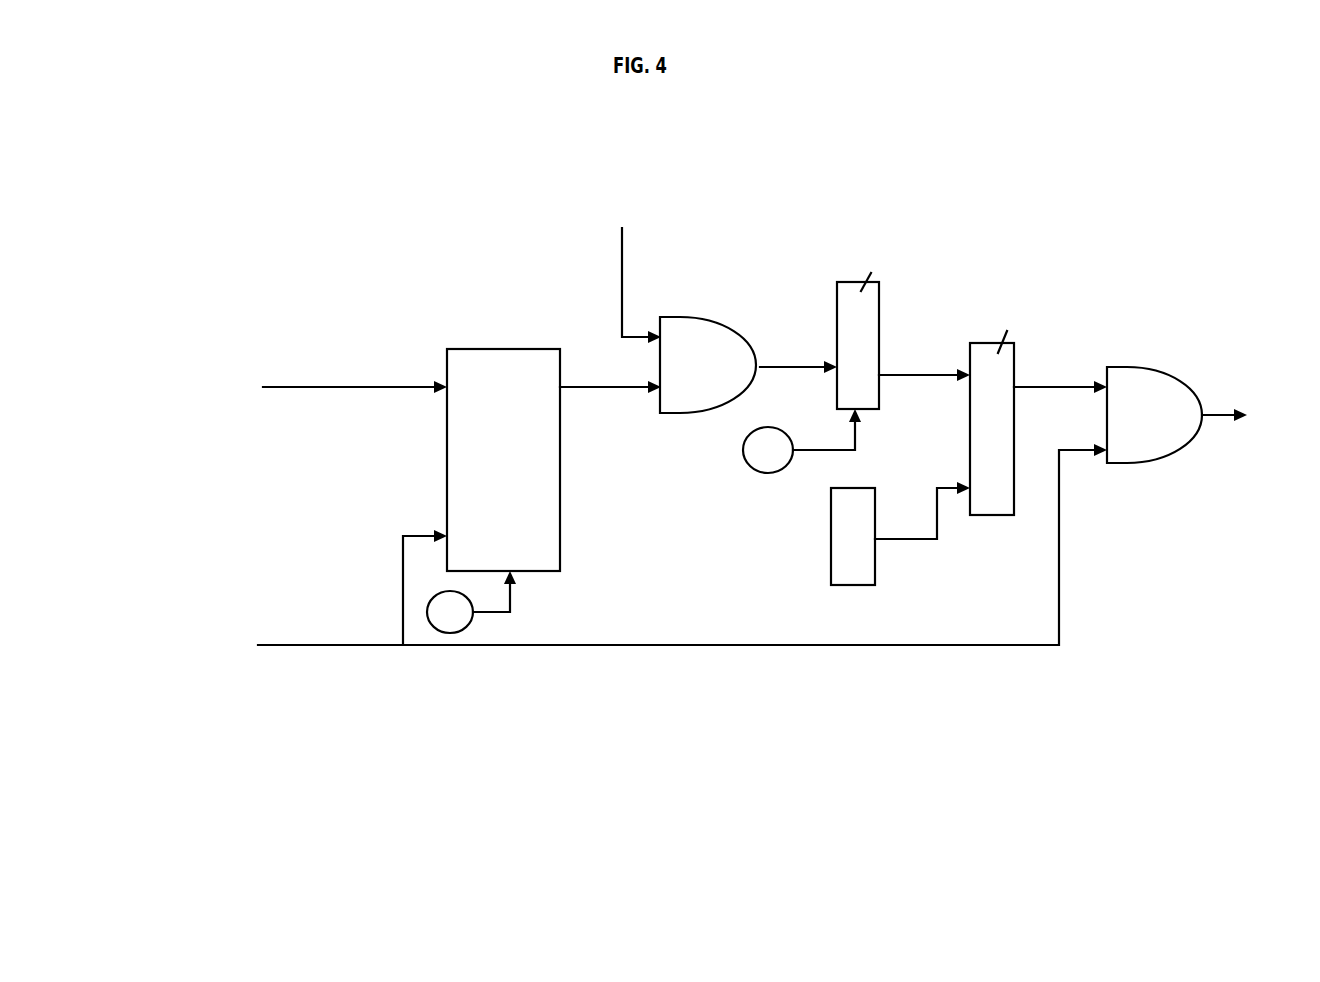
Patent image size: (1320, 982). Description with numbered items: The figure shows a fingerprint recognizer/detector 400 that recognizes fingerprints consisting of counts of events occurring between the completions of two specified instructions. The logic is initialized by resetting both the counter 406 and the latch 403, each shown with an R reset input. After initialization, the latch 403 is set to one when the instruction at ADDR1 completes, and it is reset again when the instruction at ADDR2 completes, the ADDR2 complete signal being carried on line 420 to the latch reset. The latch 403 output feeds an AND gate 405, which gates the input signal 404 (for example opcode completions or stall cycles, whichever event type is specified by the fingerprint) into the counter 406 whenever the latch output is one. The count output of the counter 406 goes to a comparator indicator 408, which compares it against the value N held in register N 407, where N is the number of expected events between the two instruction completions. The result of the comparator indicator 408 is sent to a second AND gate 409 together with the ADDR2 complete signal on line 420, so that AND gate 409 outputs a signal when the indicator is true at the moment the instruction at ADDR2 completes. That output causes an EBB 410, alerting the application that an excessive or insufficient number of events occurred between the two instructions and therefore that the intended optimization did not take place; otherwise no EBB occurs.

The fingerprint recognizer/detector 400 is at (305, 121).
The latch 403 is at (525, 476).
The input signal 404 is at (597, 253).
The AND gate 405 is at (693, 379).
The counter 406 is at (838, 361).
The register N 407 is at (879, 533).
The comparator indicator 408 is at (1040, 411).
The AND gate 409 is at (1138, 431).
The EBB 410 is at (1246, 420).
The ADDR2 complete signal line 420 is at (654, 656).